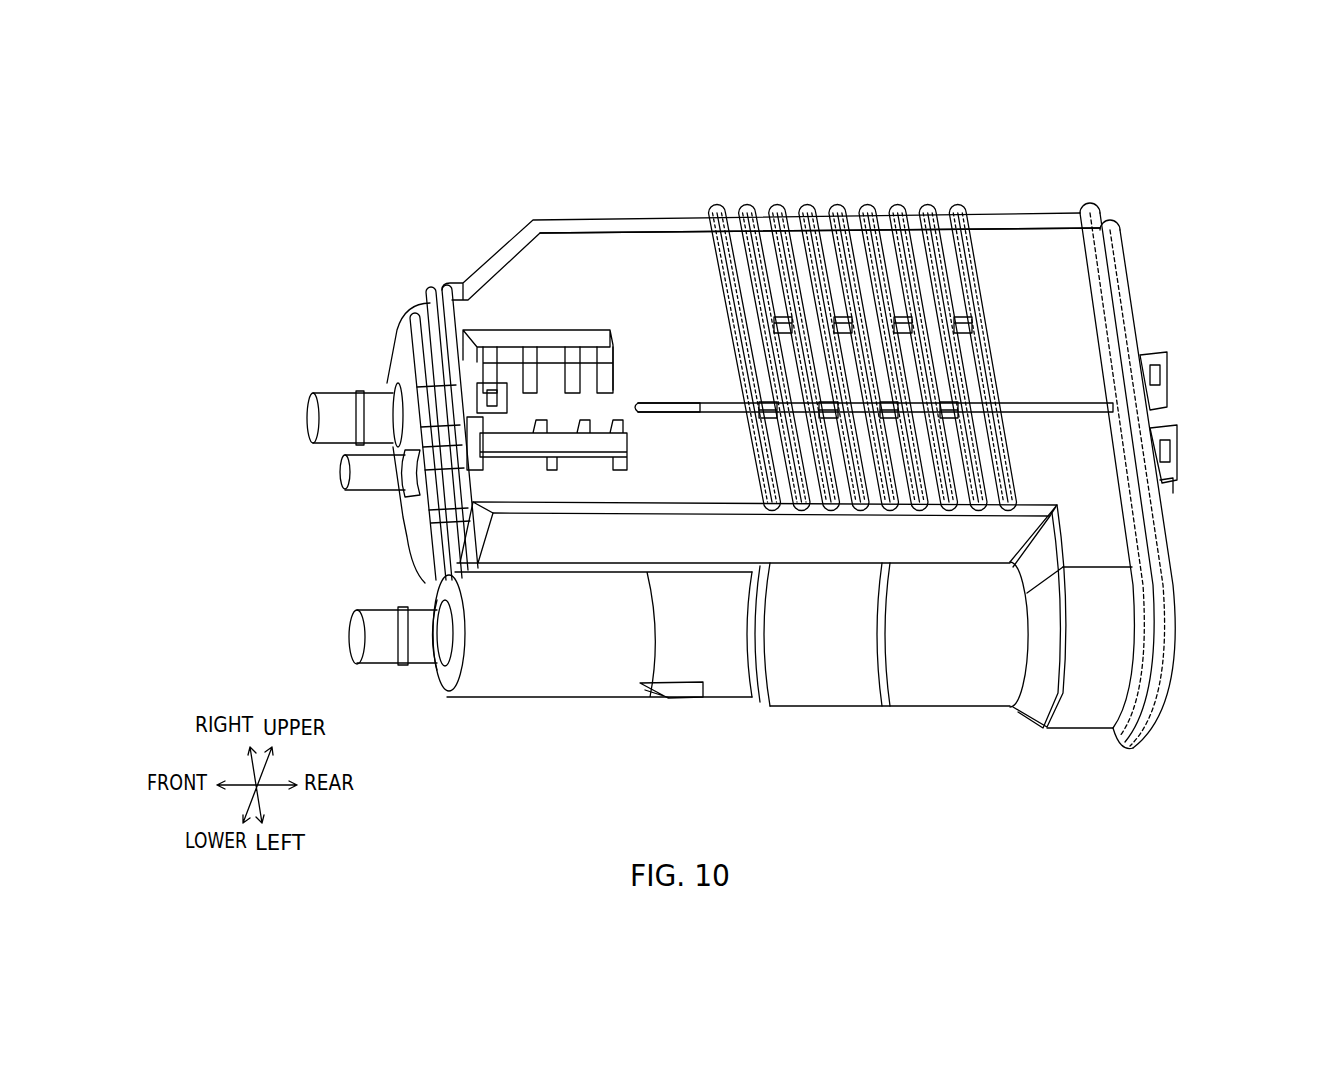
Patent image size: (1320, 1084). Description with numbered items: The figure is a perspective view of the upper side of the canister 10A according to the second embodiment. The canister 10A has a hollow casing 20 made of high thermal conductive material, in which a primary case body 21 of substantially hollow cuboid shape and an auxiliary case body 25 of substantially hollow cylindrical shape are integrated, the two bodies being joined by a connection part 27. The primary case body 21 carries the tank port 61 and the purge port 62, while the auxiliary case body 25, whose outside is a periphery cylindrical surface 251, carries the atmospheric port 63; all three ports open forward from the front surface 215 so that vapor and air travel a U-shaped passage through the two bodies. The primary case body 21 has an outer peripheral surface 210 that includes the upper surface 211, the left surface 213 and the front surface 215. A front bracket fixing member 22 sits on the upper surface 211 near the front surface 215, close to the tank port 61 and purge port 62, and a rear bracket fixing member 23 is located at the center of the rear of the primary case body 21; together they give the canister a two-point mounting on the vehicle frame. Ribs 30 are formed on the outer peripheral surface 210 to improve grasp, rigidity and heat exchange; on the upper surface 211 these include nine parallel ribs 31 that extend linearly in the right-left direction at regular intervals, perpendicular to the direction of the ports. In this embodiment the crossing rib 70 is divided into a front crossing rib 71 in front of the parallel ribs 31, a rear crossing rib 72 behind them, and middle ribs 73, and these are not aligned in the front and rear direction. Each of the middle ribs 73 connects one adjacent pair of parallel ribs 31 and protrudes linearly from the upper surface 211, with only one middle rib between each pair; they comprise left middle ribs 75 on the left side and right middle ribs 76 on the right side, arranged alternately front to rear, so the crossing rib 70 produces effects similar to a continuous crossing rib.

The canister 10A is at (1154, 169).
The casing 20 is at (1075, 333).
The primary case body 21 is at (600, 250).
The front bracket fixing member 22 is at (510, 330).
The rear bracket fixing member 23 is at (1170, 447).
The auxiliary case body 25 is at (515, 682).
The connection part 27 is at (472, 568).
The ribs 30 is at (863, 307).
The parallel ribs 31 is at (774, 207).
The tank port 61 is at (310, 417).
The purge port 62 is at (340, 470).
The atmospheric port 63 is at (350, 634).
The crossing rib 70 is at (941, 469).
The front crossing rib 71 is at (697, 413).
The rear crossing rib 72 is at (1082, 400).
The middle ribs 73 is at (941, 469).
The left middle ribs 75 is at (948, 418).
The right middle ribs 76 is at (935, 322).
The outer peripheral surface 210 is at (697, 459).
The upper surface 211 is at (1022, 245).
The left surface 213 is at (588, 540).
The front surface 215 is at (403, 358).
The periphery cylindrical surface 251 is at (786, 690).